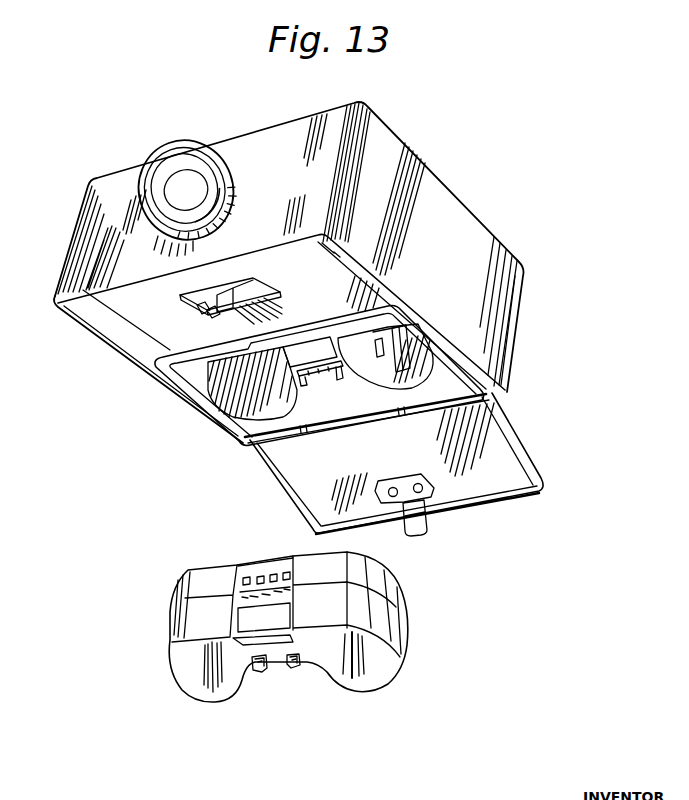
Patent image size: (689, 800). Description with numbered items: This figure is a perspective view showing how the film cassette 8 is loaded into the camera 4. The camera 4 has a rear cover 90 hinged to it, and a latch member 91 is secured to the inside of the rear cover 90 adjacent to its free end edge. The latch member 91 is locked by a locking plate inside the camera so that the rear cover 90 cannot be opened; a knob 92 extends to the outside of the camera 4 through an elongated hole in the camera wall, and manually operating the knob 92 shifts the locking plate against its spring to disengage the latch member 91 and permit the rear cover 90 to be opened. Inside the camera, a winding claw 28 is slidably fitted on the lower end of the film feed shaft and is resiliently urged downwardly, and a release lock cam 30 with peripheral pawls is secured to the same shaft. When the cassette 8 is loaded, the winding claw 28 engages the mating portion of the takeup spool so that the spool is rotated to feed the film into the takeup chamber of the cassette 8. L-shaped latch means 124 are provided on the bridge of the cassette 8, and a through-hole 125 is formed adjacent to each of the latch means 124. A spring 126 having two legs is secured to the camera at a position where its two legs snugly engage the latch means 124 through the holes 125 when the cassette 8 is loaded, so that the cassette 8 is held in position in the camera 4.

The camera 4 is at (412, 153).
The film cassette 8 is at (382, 675).
The winding claw 28 is at (410, 396).
The release lock cam 30 is at (402, 345).
The rear cover 90 is at (495, 450).
The latch member 91 is at (430, 527).
The knob 92 is at (203, 311).
The latch means 124 is at (297, 668).
The through-hole 125 is at (252, 675).
The spring 126 is at (306, 380).